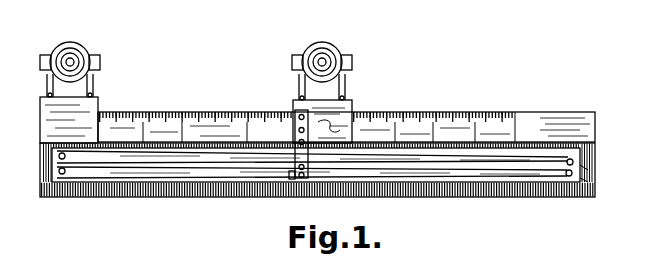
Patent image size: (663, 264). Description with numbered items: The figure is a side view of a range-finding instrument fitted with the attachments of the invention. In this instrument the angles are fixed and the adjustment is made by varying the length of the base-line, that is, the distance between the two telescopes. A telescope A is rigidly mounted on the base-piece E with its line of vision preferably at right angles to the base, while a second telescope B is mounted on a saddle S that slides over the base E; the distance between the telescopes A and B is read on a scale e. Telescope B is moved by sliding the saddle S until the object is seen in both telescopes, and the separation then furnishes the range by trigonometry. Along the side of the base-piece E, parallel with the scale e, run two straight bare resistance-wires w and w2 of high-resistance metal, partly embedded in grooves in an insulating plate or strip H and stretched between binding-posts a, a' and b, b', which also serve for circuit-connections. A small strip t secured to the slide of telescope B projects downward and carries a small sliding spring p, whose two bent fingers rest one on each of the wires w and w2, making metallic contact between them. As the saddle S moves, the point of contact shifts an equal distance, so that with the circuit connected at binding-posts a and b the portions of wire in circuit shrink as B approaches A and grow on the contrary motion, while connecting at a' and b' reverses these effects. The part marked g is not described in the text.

The telescope A is at (70, 82).
The second telescope B is at (322, 82).
The scale e is at (346, 120).
The base-piece E is at (212, 198).
The plate or strip H is at (114, 198).
The strip t is at (294, 113).
The saddle S is at (329, 128).
The sliding spring p is at (290, 178).
The resistance-wire w is at (312, 159).
The resistance-wire w2 is at (312, 174).
The end pins g is at (567, 162).
The binding-post a is at (59, 157).
The binding-post b is at (59, 172).
The binding-post a' is at (598, 176).
The binding-post b' is at (597, 190).